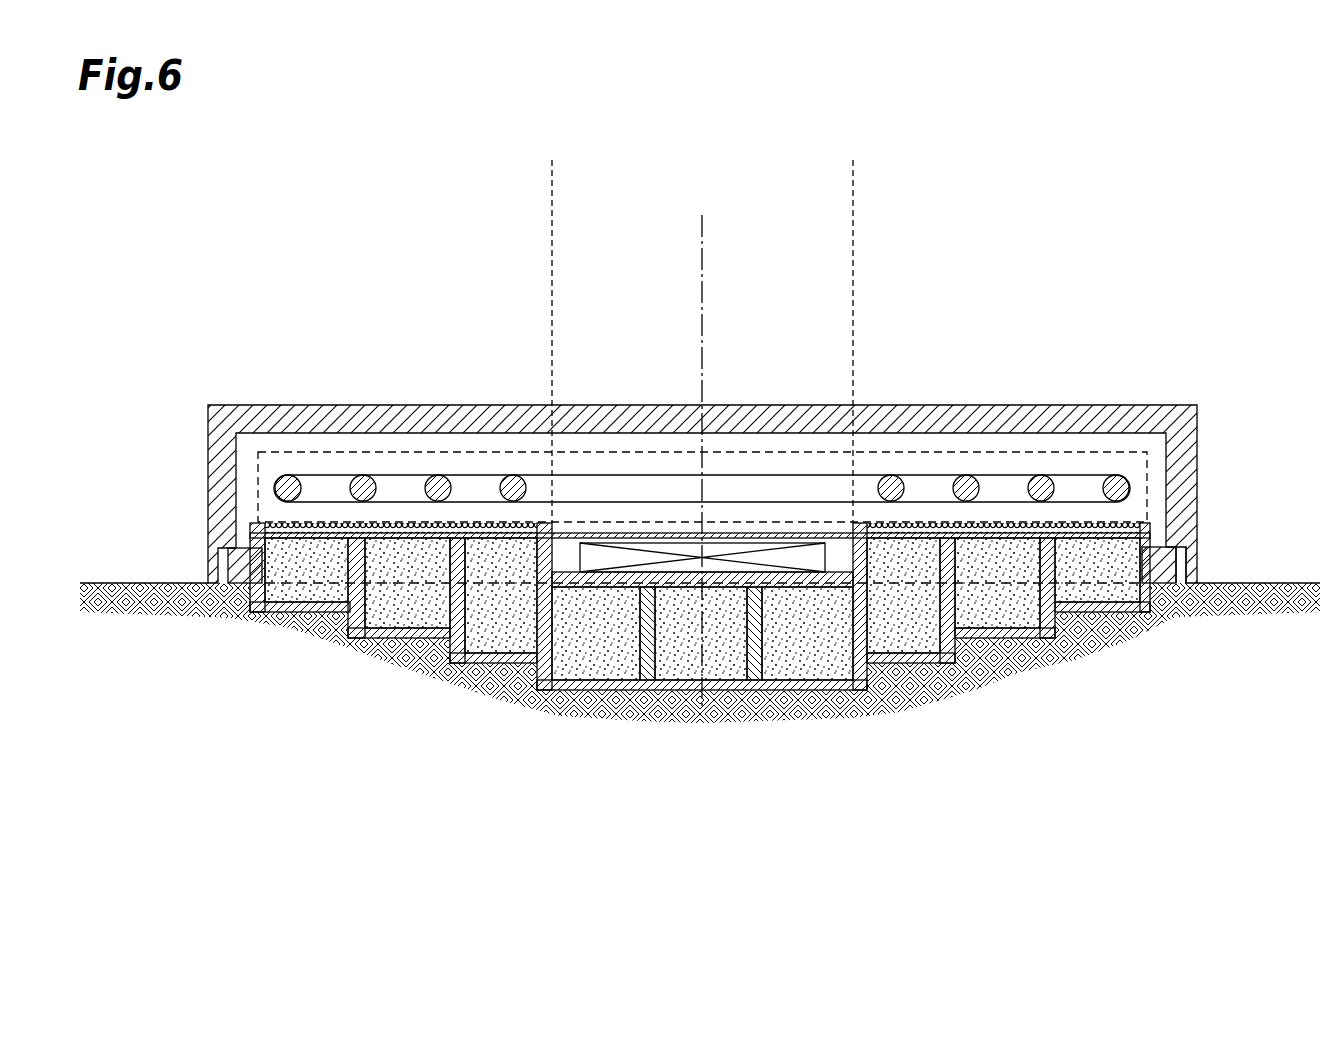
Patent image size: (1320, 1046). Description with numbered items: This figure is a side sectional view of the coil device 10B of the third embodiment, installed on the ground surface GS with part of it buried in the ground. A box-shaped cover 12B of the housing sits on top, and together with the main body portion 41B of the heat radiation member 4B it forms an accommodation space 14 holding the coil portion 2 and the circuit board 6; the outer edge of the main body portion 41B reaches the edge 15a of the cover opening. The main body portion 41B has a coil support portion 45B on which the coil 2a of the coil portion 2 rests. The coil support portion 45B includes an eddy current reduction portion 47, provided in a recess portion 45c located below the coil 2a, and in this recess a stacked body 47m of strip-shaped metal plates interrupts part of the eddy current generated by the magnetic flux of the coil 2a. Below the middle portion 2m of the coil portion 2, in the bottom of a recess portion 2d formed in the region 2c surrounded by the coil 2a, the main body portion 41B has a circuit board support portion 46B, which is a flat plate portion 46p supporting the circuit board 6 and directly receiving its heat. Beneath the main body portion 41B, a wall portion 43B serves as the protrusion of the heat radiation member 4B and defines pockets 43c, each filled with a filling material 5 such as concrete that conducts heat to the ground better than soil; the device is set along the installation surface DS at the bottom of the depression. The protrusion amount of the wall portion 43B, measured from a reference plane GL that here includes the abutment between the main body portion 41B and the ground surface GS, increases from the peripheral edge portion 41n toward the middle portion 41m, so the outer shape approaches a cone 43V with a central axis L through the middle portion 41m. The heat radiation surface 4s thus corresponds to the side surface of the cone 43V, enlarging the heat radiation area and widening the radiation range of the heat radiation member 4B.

The coil device 10B is at (1209, 232).
The cover 12B is at (1163, 405).
The coil portion 2 is at (374, 452).
The coil 2a is at (510, 476).
The region 2c is at (853, 185).
The recess portion 2d is at (617, 533).
The middle portion 2m is at (670, 470).
The central axis L is at (706, 262).
The circuit board 6 is at (764, 543).
The accommodation space 14 is at (240, 556).
The edge 15a is at (222, 590).
The ground surface GS is at (100, 582).
The heat radiation member 4B is at (1185, 565).
The heat radiation surface 4s is at (997, 677).
The filling material 5 is at (727, 653).
The main body portion 41B is at (1172, 545).
The middle portion 41m is at (697, 687).
The peripheral edge portion 41n is at (247, 615).
The wall portion 43B is at (837, 687).
The pockets 43c is at (828, 645).
The cone 43V is at (397, 655).
The coil support portion 45B is at (247, 545).
The recess portion 45c is at (308, 523).
The circuit board support portion 46B is at (626, 587).
The flat plate portion 46p is at (843, 567).
The eddy current reduction portion 47 is at (403, 518).
The stacked body 47m is at (489, 525).
The installation surface DS is at (573, 660).
The reference plane GL is at (915, 657).